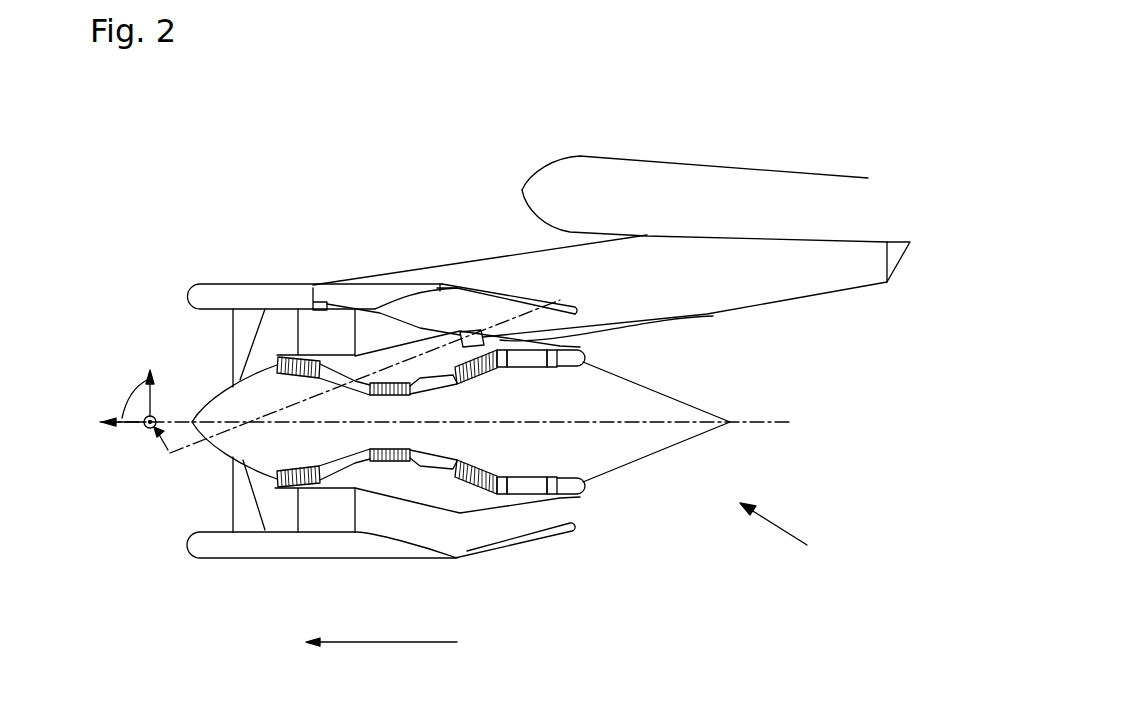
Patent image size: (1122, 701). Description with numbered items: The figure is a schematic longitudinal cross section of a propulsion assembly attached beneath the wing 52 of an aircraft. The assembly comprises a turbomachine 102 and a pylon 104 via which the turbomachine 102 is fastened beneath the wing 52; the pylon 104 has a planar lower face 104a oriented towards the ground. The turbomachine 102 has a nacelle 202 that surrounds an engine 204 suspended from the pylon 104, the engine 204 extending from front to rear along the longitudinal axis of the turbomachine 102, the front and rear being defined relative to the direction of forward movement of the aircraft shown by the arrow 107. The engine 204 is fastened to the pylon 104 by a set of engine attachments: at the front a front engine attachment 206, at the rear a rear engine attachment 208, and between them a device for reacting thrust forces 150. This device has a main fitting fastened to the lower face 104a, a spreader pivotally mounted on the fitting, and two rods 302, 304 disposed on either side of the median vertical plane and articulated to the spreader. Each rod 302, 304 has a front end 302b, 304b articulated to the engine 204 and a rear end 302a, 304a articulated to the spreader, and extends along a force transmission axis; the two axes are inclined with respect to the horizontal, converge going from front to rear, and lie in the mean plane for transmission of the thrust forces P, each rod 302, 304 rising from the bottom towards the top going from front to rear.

The wing 52 is at (786, 218).
The turbomachine 102 is at (800, 530).
The pylon 104 is at (806, 278).
The lower face 104a is at (713, 316).
The arrow 107 is at (381, 626).
The device for reacting thrust forces 150 is at (472, 342).
The nacelle 202 is at (207, 547).
The engine 204 is at (687, 413).
The front engine attachment 206 is at (313, 302).
The rear engine attachment 208 is at (583, 357).
The rod 302 is at (361, 276).
The rod 304 is at (405, 378).
The rear end 302a is at (426, 226).
The rear end 304a is at (462, 335).
The front end 302b is at (225, 219).
The front end 304b is at (357, 308).
The mean plane for transmission of the thrust forces P is at (560, 302).